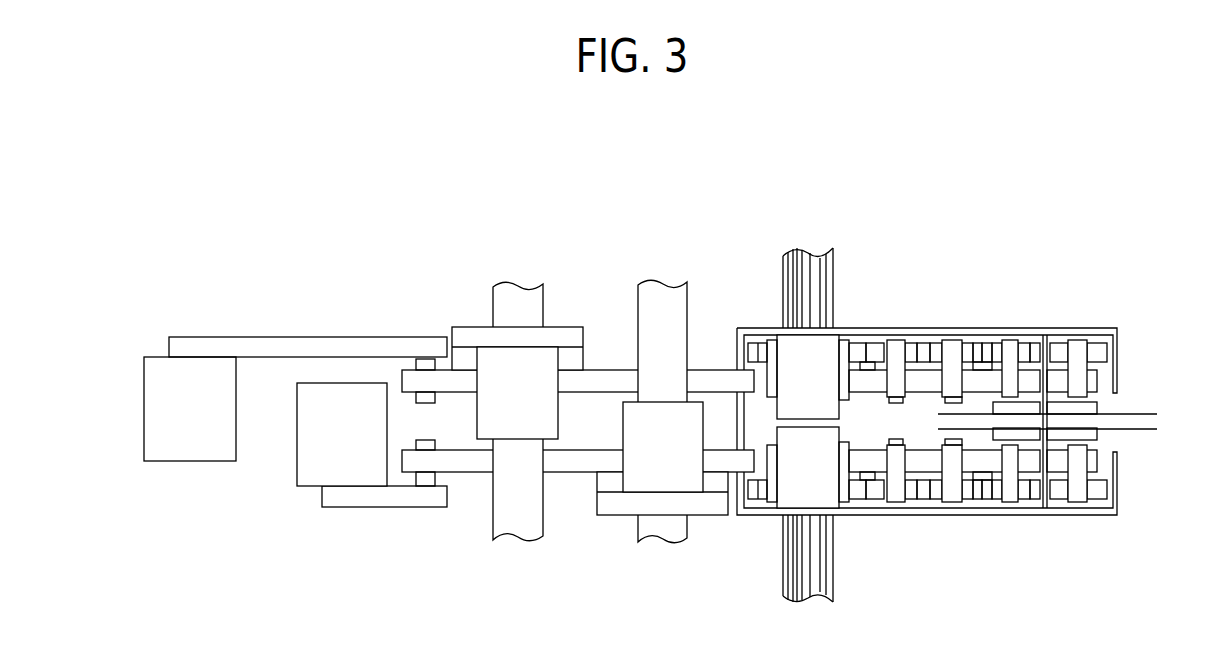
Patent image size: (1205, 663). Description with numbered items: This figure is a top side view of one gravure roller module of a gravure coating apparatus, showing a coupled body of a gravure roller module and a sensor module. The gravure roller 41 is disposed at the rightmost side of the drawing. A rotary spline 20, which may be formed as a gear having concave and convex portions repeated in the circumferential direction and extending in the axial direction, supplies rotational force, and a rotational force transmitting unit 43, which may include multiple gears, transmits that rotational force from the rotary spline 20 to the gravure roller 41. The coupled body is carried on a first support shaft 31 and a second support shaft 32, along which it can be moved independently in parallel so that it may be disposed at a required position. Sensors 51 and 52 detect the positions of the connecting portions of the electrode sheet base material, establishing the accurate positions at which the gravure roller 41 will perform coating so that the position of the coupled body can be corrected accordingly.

The rotary spline 20 is at (816, 253).
The first support shaft 31 is at (677, 290).
The second support shaft 32 is at (529, 292).
The gravure roller 41 is at (1153, 412).
The rotational force transmitting unit 43 is at (952, 346).
The sensor 51 is at (187, 452).
The sensor 52 is at (300, 473).